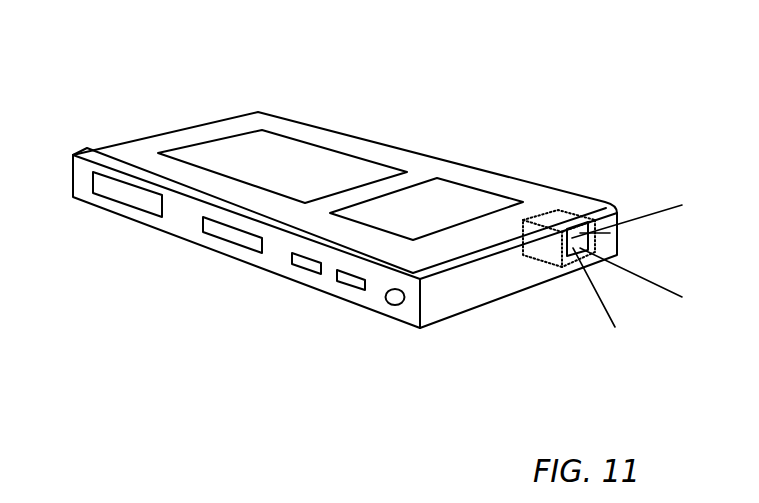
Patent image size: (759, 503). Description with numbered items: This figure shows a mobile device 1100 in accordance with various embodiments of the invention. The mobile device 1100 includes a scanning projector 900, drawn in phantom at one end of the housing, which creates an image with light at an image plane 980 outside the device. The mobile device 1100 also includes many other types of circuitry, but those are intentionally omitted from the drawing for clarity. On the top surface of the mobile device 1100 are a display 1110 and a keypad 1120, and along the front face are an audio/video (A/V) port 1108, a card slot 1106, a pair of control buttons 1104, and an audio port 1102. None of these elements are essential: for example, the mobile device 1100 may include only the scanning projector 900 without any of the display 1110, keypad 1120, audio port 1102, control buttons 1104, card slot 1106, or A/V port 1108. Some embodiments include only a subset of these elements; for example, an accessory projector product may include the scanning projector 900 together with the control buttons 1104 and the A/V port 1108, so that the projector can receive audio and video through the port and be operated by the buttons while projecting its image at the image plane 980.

The mobile device 1100 is at (637, 68).
The keypad 1120 is at (297, 152).
The display 1110 is at (437, 188).
The audio/video (A/V) port 1108 is at (113, 192).
The card slot 1106 is at (227, 233).
The control buttons 1104 is at (342, 282).
The audio port 1102 is at (395, 306).
The scanning projector 900 is at (558, 212).
The image plane 980 is at (632, 266).